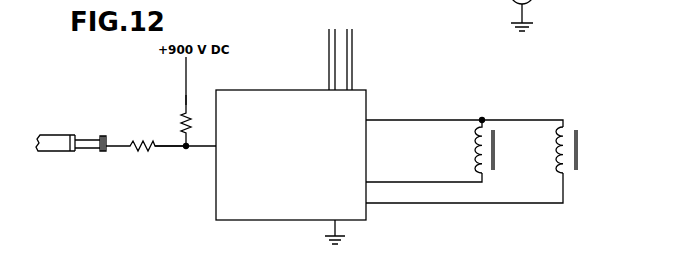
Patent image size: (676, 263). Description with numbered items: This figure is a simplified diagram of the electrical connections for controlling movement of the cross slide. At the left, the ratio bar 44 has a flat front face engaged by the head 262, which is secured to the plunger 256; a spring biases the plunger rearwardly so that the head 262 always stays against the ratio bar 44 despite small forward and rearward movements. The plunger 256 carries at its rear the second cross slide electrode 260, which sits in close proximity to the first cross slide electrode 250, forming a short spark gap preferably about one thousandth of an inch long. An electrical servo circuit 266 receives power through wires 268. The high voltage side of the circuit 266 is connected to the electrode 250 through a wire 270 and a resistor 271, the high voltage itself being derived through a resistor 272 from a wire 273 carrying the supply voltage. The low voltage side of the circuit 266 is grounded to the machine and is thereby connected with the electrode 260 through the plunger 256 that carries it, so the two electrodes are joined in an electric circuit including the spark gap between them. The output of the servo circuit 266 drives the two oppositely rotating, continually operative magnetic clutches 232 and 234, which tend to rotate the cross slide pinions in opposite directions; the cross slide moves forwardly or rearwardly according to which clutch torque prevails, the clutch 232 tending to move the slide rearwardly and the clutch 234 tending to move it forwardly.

The ratio bar 44 is at (55, 138).
The head 262 is at (74, 153).
The plunger 256 is at (90, 150).
The first cross slide electrode 250 is at (105, 138).
The second cross slide electrode 260 is at (101, 139).
The wire 270 is at (130, 145).
The resistor 271 is at (157, 149).
The resistor 272 is at (190, 117).
The wire 273 is at (184, 98).
The electrical servo circuit 266 is at (266, 98).
The wires 268 is at (335, 76).
The magnetic clutch 232 is at (475, 157).
The magnetic clutch 234 is at (557, 152).